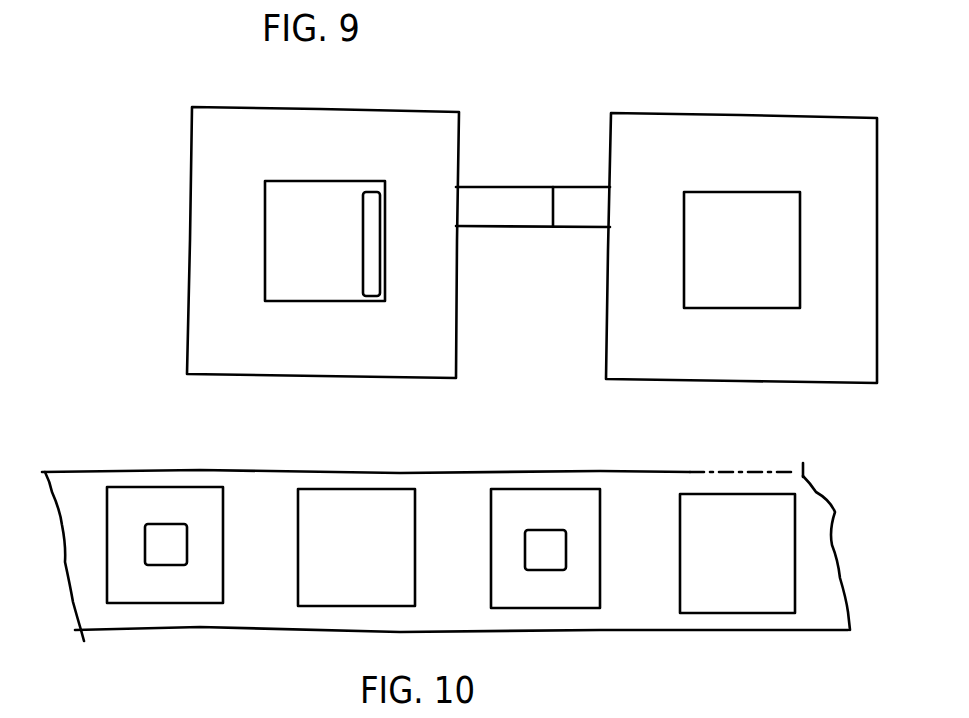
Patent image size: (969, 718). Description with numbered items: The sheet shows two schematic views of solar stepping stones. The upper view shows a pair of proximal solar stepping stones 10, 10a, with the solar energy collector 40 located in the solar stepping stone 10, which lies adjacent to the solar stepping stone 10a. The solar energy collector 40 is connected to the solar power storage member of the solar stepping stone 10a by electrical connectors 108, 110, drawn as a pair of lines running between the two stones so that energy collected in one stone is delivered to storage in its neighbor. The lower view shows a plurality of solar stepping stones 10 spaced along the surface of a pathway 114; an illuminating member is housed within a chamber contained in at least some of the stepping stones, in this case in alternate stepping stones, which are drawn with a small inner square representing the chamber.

In FIG. 9, the solar stepping stone 10 is at (400, 107).
In FIG. 10, the solar stepping stone 10 is at (193, 487).
In FIG. 9, the solar stepping stone 10a is at (712, 112).
In FIG. 9, the solar energy collector 40 is at (373, 256).
In FIG. 9, the electrical connector 108 is at (497, 186).
In FIG. 9, the electrical connector 110 is at (553, 186).
In FIG. 10, the pathway 114 is at (627, 618).